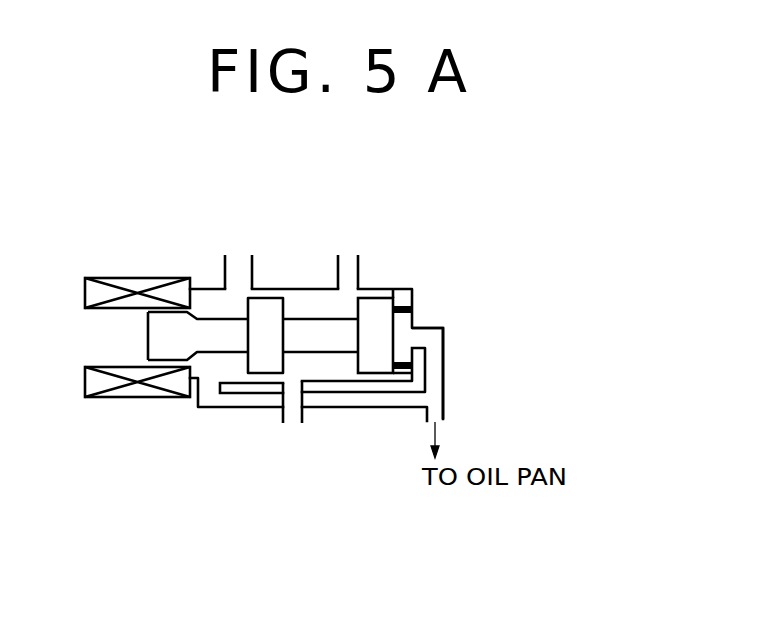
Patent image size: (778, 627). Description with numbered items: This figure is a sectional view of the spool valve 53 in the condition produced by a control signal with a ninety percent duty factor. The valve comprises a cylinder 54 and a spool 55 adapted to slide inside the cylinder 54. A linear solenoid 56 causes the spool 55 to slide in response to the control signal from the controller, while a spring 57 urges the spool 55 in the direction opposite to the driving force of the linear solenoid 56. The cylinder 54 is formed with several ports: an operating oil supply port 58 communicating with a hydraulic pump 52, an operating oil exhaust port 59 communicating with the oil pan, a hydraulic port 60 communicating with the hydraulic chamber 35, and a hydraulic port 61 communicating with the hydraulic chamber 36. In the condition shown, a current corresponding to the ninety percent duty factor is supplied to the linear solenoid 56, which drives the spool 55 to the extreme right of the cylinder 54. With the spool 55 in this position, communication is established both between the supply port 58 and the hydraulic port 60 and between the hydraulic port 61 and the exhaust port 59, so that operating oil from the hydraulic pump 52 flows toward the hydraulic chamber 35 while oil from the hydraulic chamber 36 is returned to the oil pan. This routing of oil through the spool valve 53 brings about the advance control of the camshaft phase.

The hydraulic chamber 35 is at (347, 240).
The hydraulic chamber 36 is at (240, 243).
The hydraulic pump 52 is at (293, 427).
The spool valve 53 is at (462, 374).
The cylinder 54 is at (393, 295).
The spool 55 is at (312, 335).
The linear solenoid 56 is at (102, 278).
The spring 57 is at (405, 305).
The operating oil supply port 58 is at (292, 390).
The operating oil exhaust port 59 is at (435, 340).
The hydraulic port 60 is at (350, 273).
The hydraulic port 61 is at (237, 278).